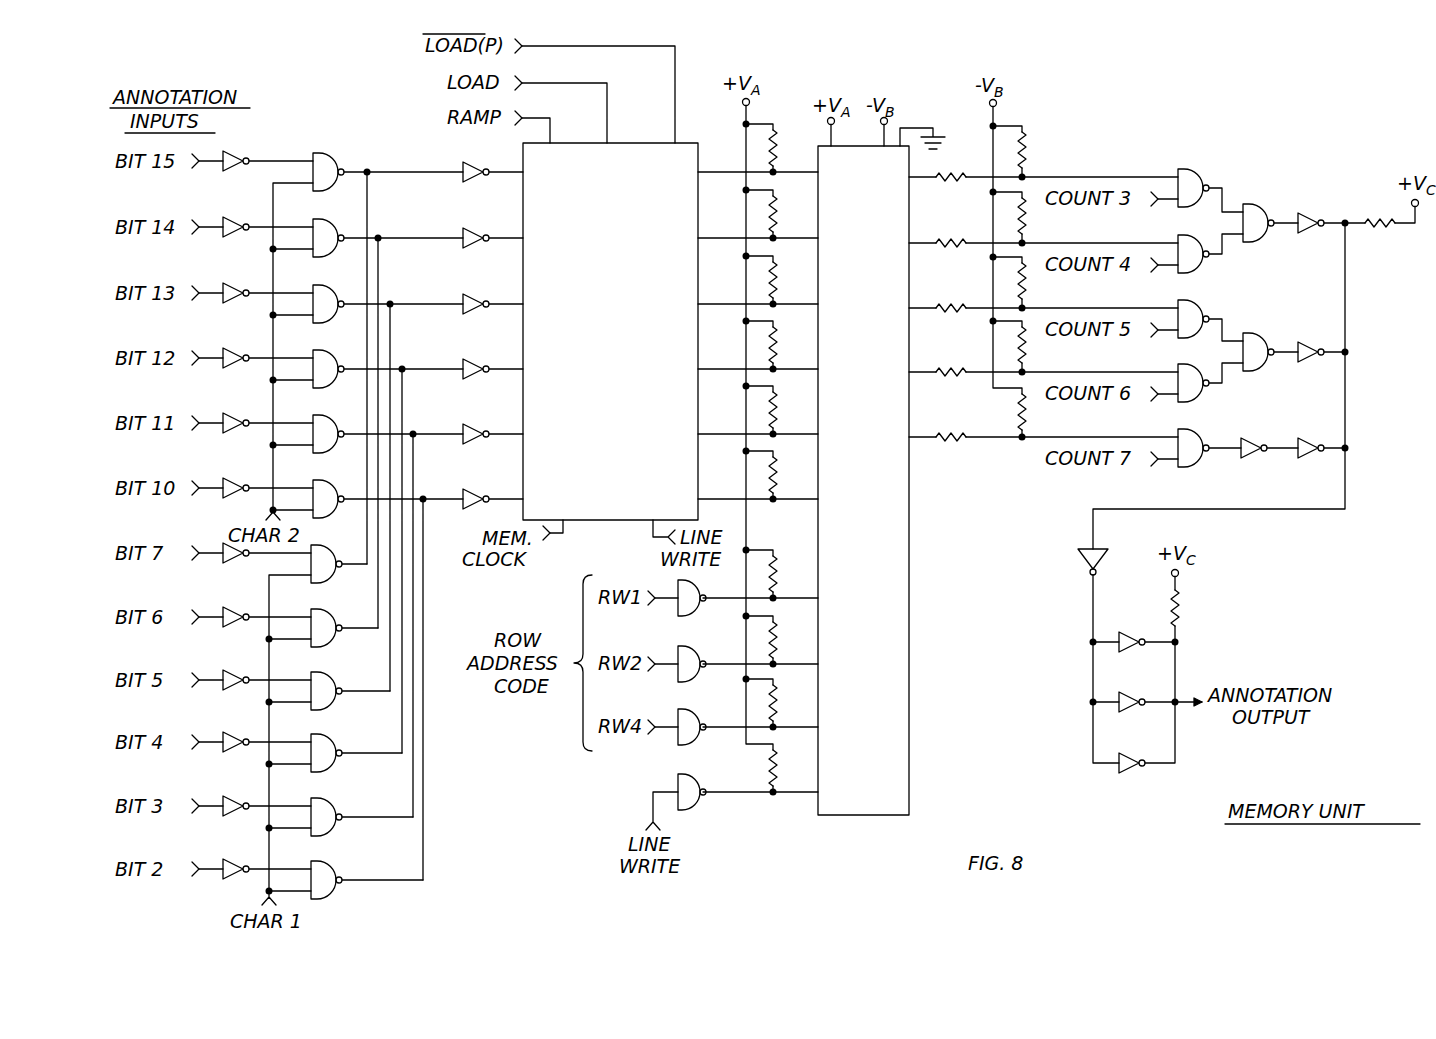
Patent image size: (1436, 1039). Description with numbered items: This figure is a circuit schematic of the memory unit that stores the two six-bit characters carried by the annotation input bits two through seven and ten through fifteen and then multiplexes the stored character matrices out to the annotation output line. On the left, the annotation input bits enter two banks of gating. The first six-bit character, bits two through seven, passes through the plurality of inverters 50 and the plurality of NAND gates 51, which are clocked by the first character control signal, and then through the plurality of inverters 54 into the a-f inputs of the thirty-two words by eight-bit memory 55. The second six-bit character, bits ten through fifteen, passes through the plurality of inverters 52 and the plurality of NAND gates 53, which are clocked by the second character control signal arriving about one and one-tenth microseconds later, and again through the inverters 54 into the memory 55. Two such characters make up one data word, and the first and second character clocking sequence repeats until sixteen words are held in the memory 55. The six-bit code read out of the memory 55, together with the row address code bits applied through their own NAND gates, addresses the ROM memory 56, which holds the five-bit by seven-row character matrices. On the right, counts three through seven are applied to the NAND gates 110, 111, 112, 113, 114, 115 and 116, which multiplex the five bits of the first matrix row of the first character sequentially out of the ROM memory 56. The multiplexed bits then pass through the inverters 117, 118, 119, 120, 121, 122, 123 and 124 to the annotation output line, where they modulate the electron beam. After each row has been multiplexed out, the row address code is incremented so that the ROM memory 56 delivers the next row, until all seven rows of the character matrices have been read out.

The inverters 50 is at (222, 532).
The NAND gates 51 is at (352, 535).
The inverters 52 is at (278, 138).
The NAND gates 53 is at (365, 137).
The inverters 54 is at (505, 155).
The 32 words by 8-bit memory 55 is at (625, 142).
The ROM memory 56 is at (912, 518).
The NAND gate 110 is at (1196, 174).
The NAND gate 111 is at (1198, 266).
The NAND gate 112 is at (1200, 313).
The NAND gate 113 is at (1198, 398).
The NAND gate 114 is at (1195, 466).
The NAND gate 115 is at (1255, 212).
The NAND gate 116 is at (1257, 342).
The inverter 117 is at (1312, 216).
The inverter 118 is at (1302, 372).
The inverter 119 is at (1252, 466).
The inverter 120 is at (1305, 466).
The inverter 121 is at (1080, 556).
The inverter 122 is at (1130, 634).
The inverter 123 is at (1130, 695).
The inverter 124 is at (1135, 775).